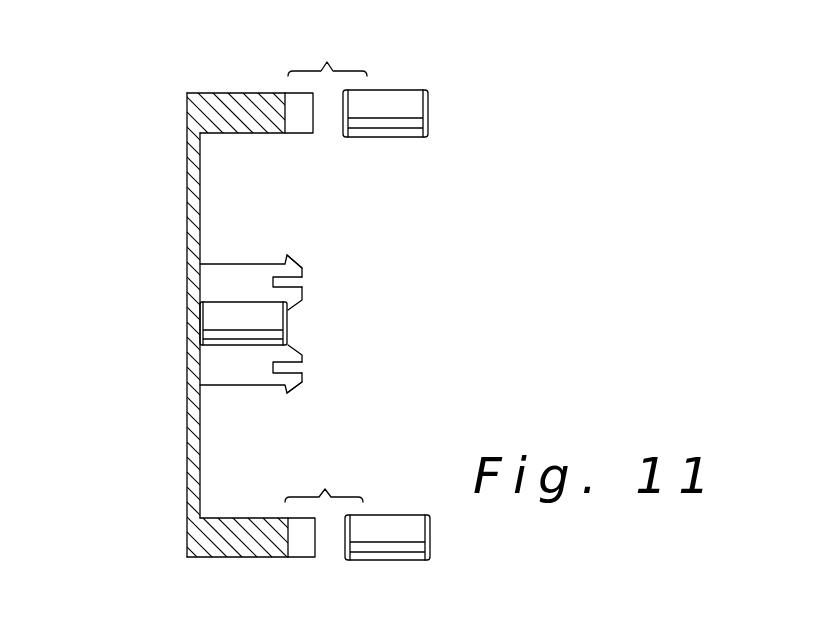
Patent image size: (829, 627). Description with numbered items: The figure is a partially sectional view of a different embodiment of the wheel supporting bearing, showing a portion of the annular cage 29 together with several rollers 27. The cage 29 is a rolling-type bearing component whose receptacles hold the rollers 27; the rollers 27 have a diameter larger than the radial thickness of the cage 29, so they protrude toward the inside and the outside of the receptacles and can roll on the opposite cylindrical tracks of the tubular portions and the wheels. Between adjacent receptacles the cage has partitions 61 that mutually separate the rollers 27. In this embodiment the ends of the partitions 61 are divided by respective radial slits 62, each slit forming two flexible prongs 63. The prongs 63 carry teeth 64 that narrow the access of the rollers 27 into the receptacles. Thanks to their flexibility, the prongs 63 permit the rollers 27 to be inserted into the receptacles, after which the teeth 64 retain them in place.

The annular cage 29 is at (176, 118).
The partitions 61 is at (247, 110).
The rollers 27 is at (390, 107).
The radial slits 62 is at (288, 282).
The flexible prongs 63 is at (282, 270).
The teeth 64 is at (292, 258).